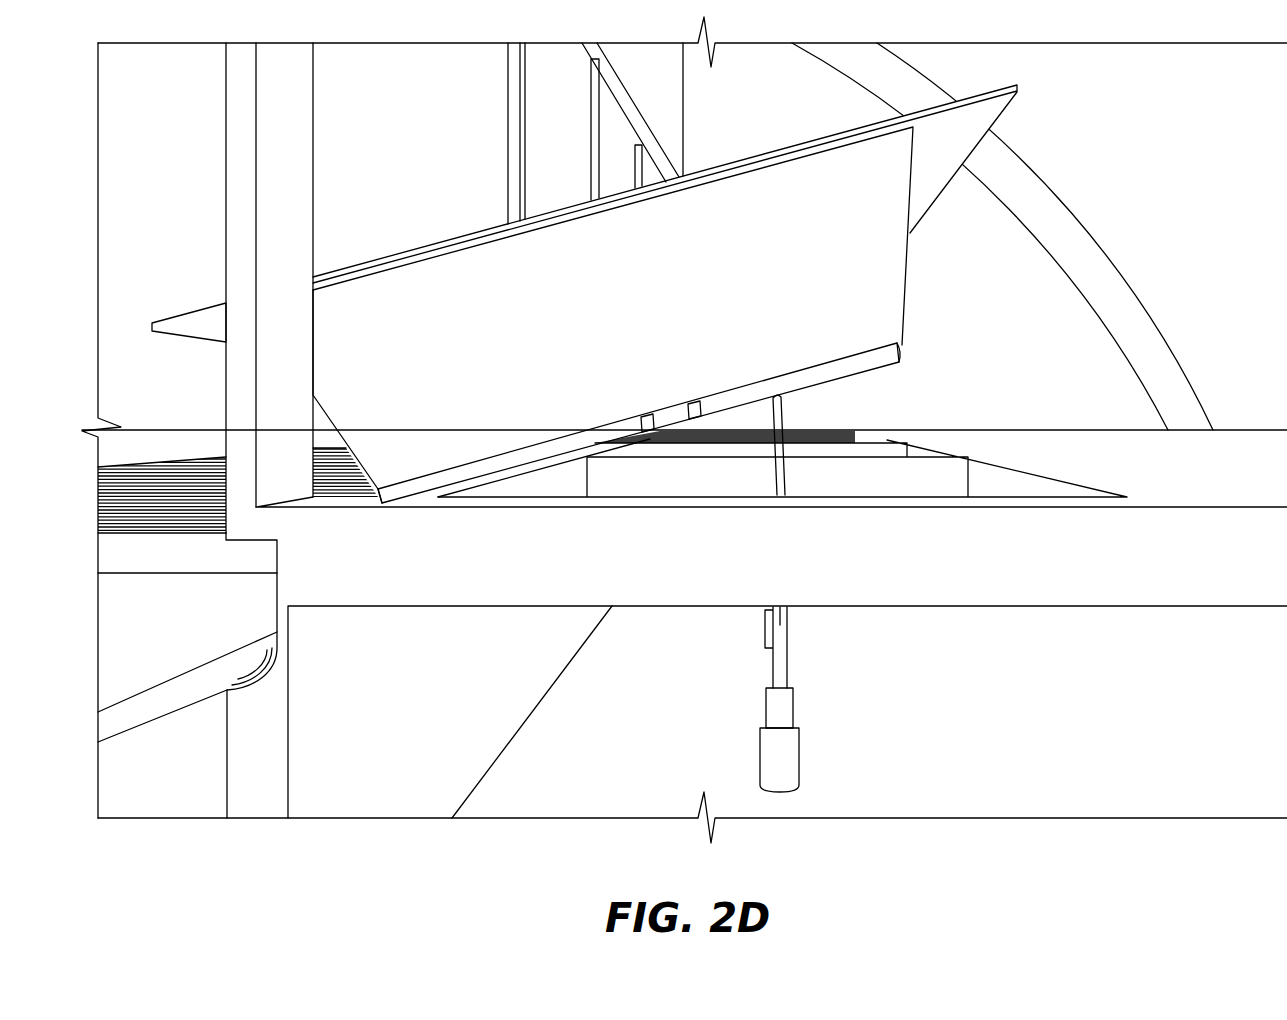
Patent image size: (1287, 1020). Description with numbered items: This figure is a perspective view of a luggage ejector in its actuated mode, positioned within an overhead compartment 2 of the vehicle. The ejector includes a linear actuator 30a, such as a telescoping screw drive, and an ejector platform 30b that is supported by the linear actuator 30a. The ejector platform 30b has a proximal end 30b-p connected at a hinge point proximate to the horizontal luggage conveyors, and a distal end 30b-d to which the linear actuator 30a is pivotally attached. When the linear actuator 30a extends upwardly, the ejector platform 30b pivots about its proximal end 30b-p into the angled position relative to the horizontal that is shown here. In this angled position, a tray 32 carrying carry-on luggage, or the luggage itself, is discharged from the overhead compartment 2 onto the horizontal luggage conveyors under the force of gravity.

The overhead compartment 2 is at (1133, 170).
The tray 32 is at (540, 339).
The ejector platform 30b is at (695, 485).
The proximal end 30b-p is at (417, 498).
The distal end 30b-d is at (903, 358).
The linear actuator 30a is at (783, 708).